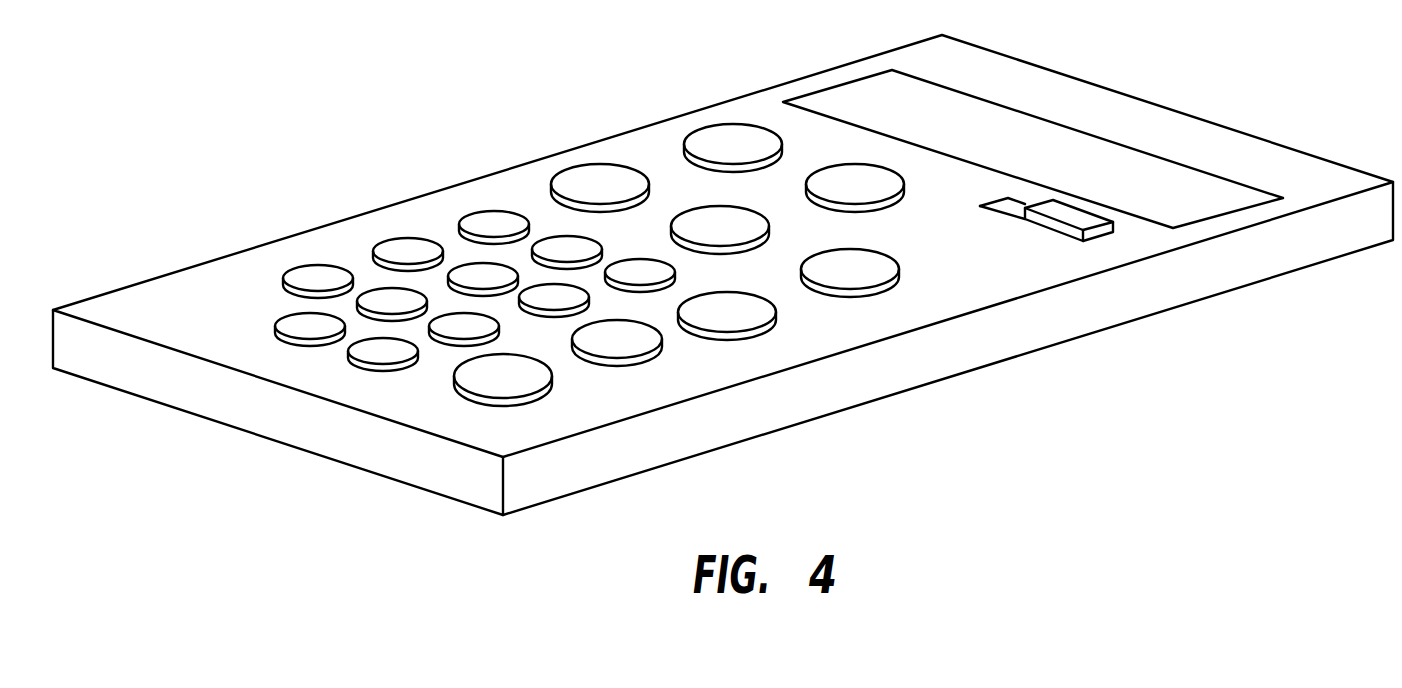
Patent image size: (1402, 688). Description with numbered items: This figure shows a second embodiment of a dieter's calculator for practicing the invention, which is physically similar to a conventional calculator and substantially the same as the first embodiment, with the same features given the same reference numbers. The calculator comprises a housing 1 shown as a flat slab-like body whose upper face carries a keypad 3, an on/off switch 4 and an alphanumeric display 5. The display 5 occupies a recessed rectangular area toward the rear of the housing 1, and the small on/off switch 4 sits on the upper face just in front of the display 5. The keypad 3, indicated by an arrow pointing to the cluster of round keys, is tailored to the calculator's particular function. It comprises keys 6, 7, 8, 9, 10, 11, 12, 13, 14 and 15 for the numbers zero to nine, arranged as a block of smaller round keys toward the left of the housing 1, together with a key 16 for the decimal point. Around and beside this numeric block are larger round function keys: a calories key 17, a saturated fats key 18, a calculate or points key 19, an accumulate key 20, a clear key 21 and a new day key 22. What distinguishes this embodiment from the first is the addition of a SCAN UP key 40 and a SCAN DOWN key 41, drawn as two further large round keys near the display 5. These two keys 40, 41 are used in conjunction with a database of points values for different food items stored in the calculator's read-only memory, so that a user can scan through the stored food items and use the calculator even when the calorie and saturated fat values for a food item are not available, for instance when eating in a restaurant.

The housing 1 is at (1038, 318).
The keypad 3 is at (443, 232).
The on/off switch 4 is at (1068, 213).
The alphanumeric display 5 is at (862, 100).
The key 6 is at (302, 339).
The key 7 is at (310, 291).
The key 8 is at (384, 314).
The key 9 is at (456, 339).
The key 10 is at (395, 264).
The key 11 is at (470, 289).
The key 12 is at (541, 310).
The key 13 is at (481, 237).
The key 14 is at (554, 262).
The key 15 is at (627, 285).
The decimal point key 16 is at (370, 364).
The calories key 17 is at (837, 282).
The saturated fats key 18 is at (714, 325).
The calculate key 19 is at (604, 352).
The accumulate key 20 is at (490, 389).
The clear key 21 is at (587, 197).
The new day key 22 is at (707, 239).
The SCAN UP key 40 is at (720, 157).
The SCAN DOWN key 41 is at (842, 197).